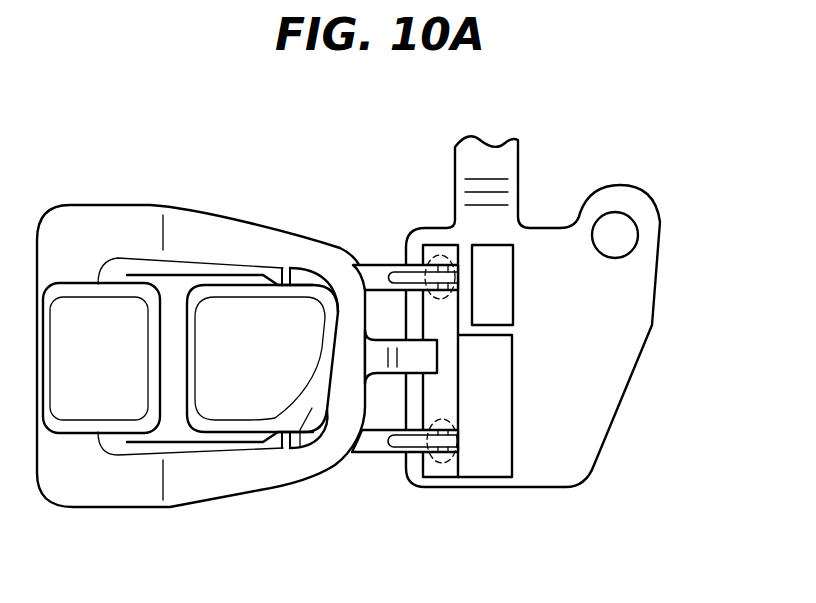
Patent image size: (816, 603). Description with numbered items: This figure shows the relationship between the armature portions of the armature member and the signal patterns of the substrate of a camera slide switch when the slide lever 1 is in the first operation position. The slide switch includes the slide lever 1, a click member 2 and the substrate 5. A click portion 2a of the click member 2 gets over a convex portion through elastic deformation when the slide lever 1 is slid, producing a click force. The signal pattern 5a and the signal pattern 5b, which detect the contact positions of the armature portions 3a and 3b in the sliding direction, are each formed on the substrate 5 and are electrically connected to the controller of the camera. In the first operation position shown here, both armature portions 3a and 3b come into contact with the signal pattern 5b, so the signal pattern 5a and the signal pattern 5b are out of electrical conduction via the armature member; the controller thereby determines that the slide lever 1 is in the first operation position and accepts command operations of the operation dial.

The slide lever 1 is at (172, 362).
The click member 2 is at (282, 460).
The click portion 2a is at (423, 363).
The armature portion 3a is at (440, 255).
The armature portion 3b is at (438, 462).
The substrate 5 is at (597, 303).
The signal pattern 5a is at (494, 282).
The signal pattern 5b is at (497, 376).